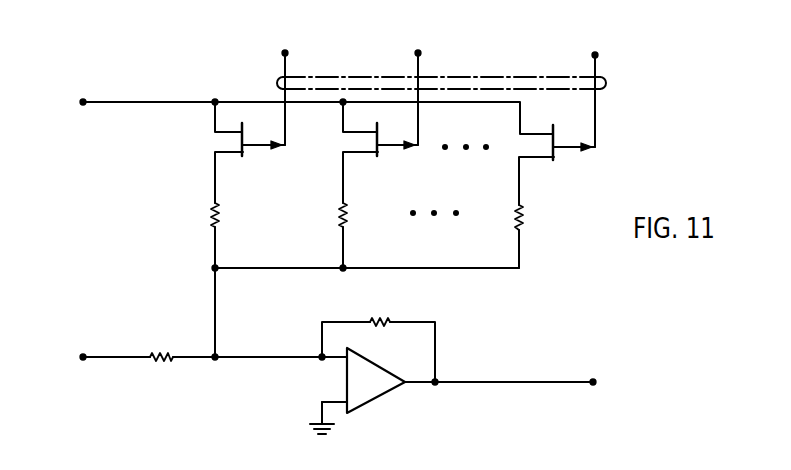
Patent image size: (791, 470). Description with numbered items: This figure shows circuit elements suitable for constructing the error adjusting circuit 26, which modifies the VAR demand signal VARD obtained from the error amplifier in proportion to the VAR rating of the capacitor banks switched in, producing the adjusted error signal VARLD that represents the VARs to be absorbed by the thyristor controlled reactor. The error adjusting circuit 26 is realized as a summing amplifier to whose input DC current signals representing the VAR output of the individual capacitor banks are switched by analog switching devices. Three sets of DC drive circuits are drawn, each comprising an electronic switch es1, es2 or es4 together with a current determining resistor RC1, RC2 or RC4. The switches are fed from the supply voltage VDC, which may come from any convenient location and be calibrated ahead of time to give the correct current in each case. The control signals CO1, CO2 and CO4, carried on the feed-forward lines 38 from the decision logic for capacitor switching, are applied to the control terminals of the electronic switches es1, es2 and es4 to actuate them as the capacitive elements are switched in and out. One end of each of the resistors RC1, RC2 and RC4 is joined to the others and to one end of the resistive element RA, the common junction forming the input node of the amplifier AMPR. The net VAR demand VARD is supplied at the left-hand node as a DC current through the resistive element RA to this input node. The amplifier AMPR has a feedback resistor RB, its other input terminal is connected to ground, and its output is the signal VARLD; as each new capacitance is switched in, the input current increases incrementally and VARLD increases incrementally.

The error adjusting circuit 26 is at (209, 61).
The lines 38 is at (279, 79).
The voltage for the summing networks VDC is at (300, 112).
The control signal CO1 is at (285, 85).
The control signal CO2 is at (418, 85).
The control signal CO4 is at (595, 86).
The electronic switch es1 is at (239, 162).
The electronic switch es2 is at (372, 164).
The electronic switch es4 is at (546, 165).
The current determining resistor RC1 is at (221, 214).
The current determining resistor RC2 is at (338, 214).
The current determining resistor RC4 is at (525, 218).
The resistive element RA is at (163, 348).
The feedback resistor RB is at (380, 318).
The amplifier AMPR is at (357, 391).
The VAR demand signal VARD is at (191, 357).
The adjusted error signal VARLD is at (527, 383).